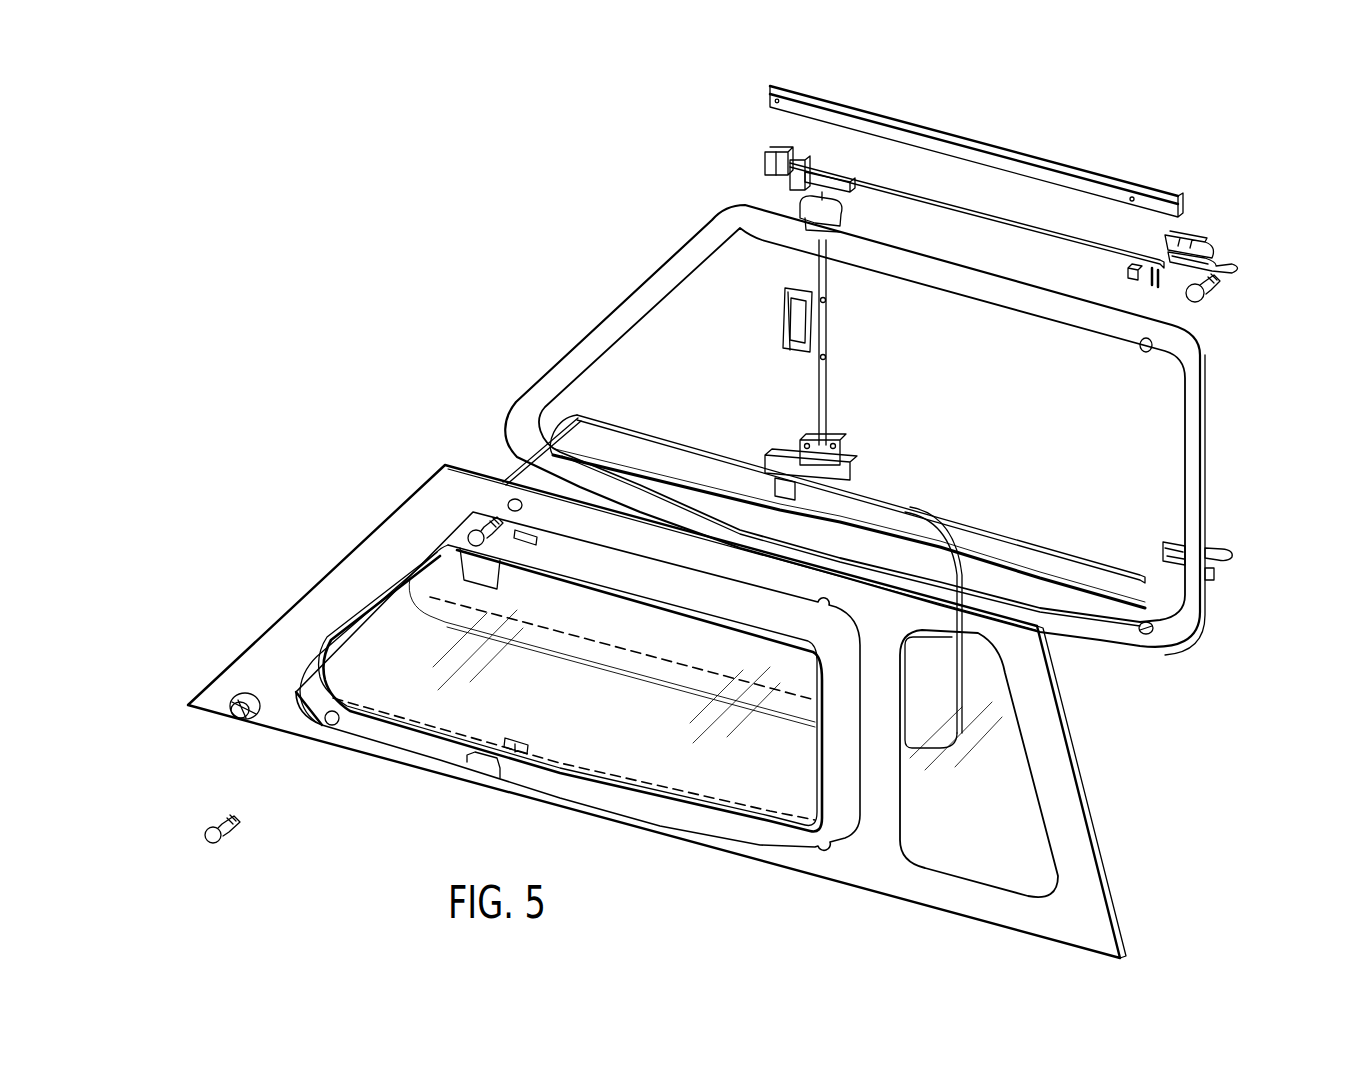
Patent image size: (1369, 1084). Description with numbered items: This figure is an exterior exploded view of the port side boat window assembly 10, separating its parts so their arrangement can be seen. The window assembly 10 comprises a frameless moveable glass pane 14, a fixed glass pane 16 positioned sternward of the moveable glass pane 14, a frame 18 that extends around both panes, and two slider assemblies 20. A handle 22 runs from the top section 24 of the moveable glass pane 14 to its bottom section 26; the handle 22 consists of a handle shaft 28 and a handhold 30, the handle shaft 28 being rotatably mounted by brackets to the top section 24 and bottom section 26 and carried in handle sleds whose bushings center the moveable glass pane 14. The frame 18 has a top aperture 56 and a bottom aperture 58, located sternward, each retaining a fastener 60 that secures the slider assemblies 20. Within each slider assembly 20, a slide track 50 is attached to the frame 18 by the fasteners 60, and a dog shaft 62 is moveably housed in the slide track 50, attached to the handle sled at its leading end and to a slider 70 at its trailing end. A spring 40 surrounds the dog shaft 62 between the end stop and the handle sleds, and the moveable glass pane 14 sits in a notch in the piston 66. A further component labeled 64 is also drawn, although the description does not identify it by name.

The window assembly 10 is at (397, 245).
The moveable glass pane 14 is at (382, 652).
The fixed glass pane 16 is at (1003, 760).
The frame 18 is at (1098, 862).
The slider assemblies 20 is at (1090, 152).
The handle 22 is at (842, 349).
The top section 24 is at (443, 583).
The bottom section 26 is at (350, 732).
The handle shaft 28 is at (805, 288).
The handhold 30 is at (785, 340).
The spring 40 is at (825, 180).
The slide tracks 50 is at (975, 135).
The top aperture 56 is at (505, 495).
The bottom aperture 58 is at (326, 726).
The fastener 60 is at (470, 530).
The dog shaft 62 is at (1030, 230).
The lever 64 is at (1222, 262).
The piston 66 is at (1207, 297).
The slider 70 is at (1195, 243).